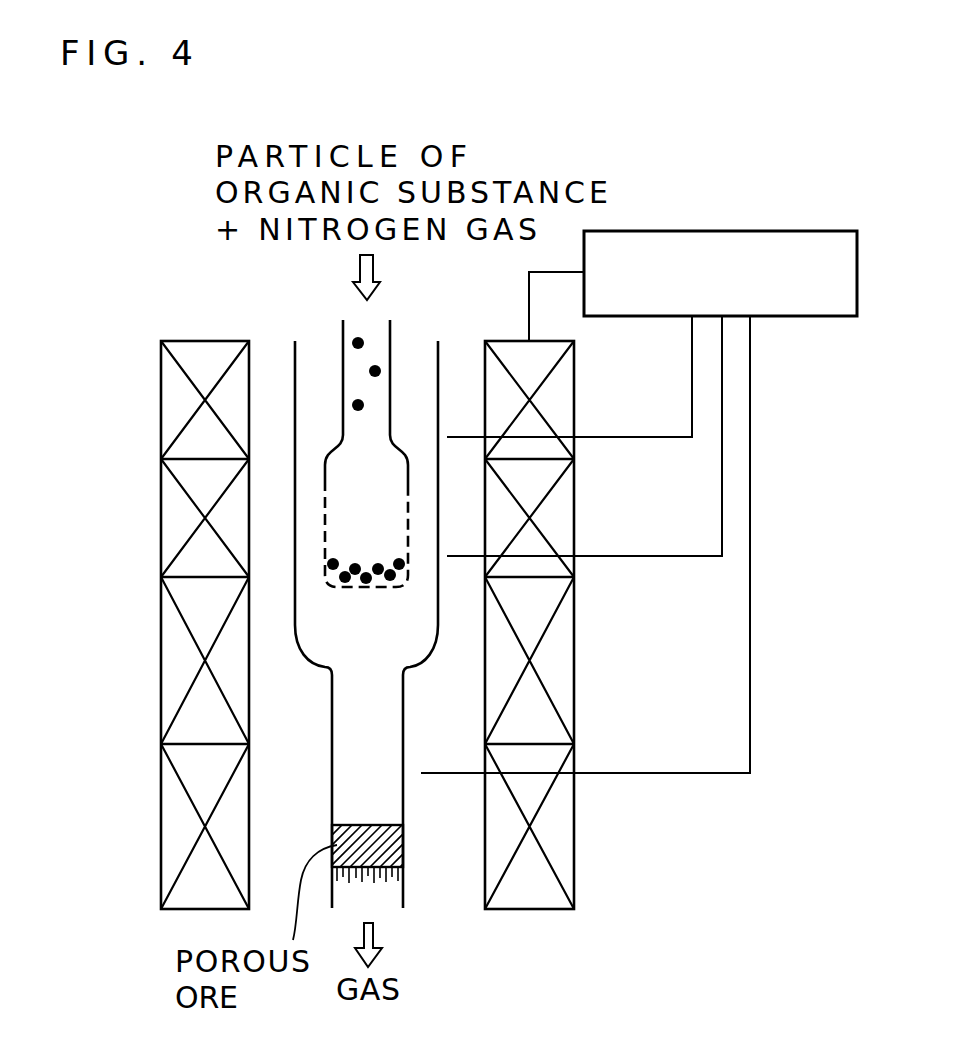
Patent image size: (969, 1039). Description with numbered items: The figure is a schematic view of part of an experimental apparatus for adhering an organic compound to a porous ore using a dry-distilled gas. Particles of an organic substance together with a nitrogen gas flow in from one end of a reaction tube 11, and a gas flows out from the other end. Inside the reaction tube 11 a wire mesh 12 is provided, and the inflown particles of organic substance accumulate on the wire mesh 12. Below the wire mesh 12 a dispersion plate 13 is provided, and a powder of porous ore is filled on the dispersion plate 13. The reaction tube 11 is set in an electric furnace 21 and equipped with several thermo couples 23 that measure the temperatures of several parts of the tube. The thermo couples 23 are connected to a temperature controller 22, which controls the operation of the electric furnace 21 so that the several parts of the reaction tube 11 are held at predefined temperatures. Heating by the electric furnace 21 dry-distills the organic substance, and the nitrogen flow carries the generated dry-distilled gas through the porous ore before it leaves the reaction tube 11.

The reaction tube 11 is at (439, 392).
The wire mesh 12 is at (325, 508).
The dispersion plate 13 is at (403, 875).
The electric furnace 21 is at (173, 815).
The temperature controller 22 is at (731, 232).
The thermo couple 23 is at (463, 438).